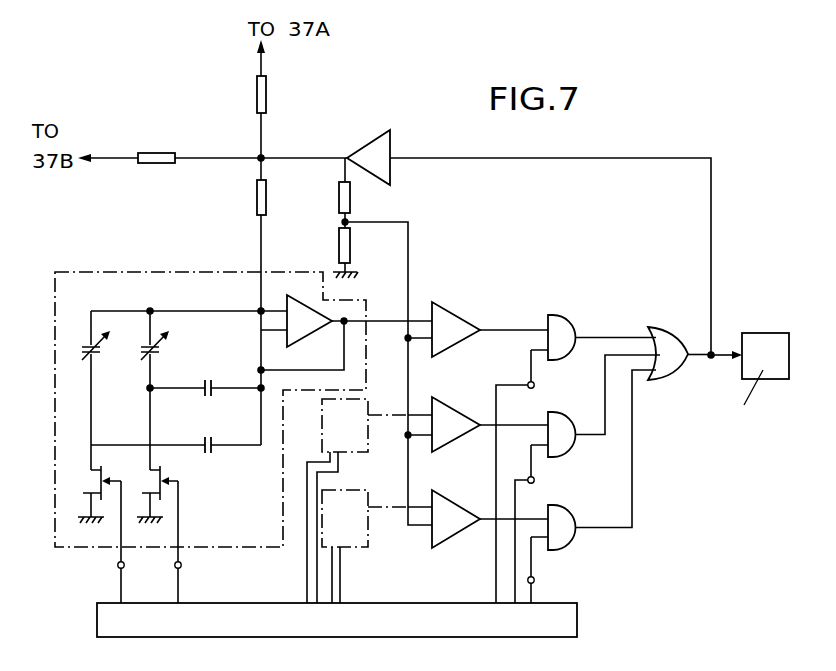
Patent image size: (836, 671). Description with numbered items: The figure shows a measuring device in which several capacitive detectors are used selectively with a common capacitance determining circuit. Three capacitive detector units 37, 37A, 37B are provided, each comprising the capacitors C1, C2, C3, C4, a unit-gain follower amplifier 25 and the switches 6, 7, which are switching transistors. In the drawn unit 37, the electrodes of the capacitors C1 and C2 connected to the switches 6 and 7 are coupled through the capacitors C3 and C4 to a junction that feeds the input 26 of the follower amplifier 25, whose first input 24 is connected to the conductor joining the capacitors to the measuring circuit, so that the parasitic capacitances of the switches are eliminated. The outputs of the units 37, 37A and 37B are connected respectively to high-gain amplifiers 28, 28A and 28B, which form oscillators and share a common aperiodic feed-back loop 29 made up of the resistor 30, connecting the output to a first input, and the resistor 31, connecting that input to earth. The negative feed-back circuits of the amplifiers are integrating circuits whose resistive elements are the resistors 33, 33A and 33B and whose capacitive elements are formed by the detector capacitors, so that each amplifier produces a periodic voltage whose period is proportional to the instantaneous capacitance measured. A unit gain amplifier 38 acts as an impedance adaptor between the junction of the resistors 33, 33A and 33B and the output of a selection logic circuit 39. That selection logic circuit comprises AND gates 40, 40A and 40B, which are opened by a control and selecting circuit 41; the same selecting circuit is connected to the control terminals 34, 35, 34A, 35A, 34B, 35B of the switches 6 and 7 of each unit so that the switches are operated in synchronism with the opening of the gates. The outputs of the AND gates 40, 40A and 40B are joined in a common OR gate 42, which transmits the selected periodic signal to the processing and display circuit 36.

The switch 6 is at (106, 480).
The switch 7 is at (164, 478).
The first input of follower amplifier 24 is at (289, 306).
The follower amplifier 25 is at (326, 326).
The other input of follower amplifier 26 is at (287, 327).
The high-gain amplifier 28 is at (453, 327).
The amplifier 28A is at (453, 427).
The amplifier 28B is at (455, 521).
The feed-back loop 29 is at (358, 214).
The resistor 30 is at (339, 198).
The resistor 31 is at (339, 244).
The resistor 33 is at (257, 200).
The resistor 33A is at (266, 99).
The resistor 33B is at (161, 153).
The control terminal 34 is at (118, 566).
The control terminal 35 is at (181, 566).
The control terminal 34A is at (307, 570).
The control terminal 35A is at (317, 590).
The control terminal 34B is at (333, 570).
The control terminal 35B is at (341, 590).
The processing and display circuit 36 is at (762, 350).
The capacitive detector unit 37 is at (120, 272).
The capacitive detector unit 37A is at (343, 421).
The capacitive detector unit 37B is at (356, 500).
The unit gain amplifier 38 is at (368, 140).
The selection logic circuit 39 is at (584, 335).
The AND gate 40 is at (560, 330).
The AND gate 40A is at (560, 430).
The AND gate 40B is at (564, 527).
The control and selecting circuit 41 is at (568, 620).
The OR gate 42 is at (667, 342).
The capacitor C1 is at (95, 356).
The capacitor C2 is at (156, 354).
The capacitor C3 is at (213, 449).
The capacitor C4 is at (214, 391).